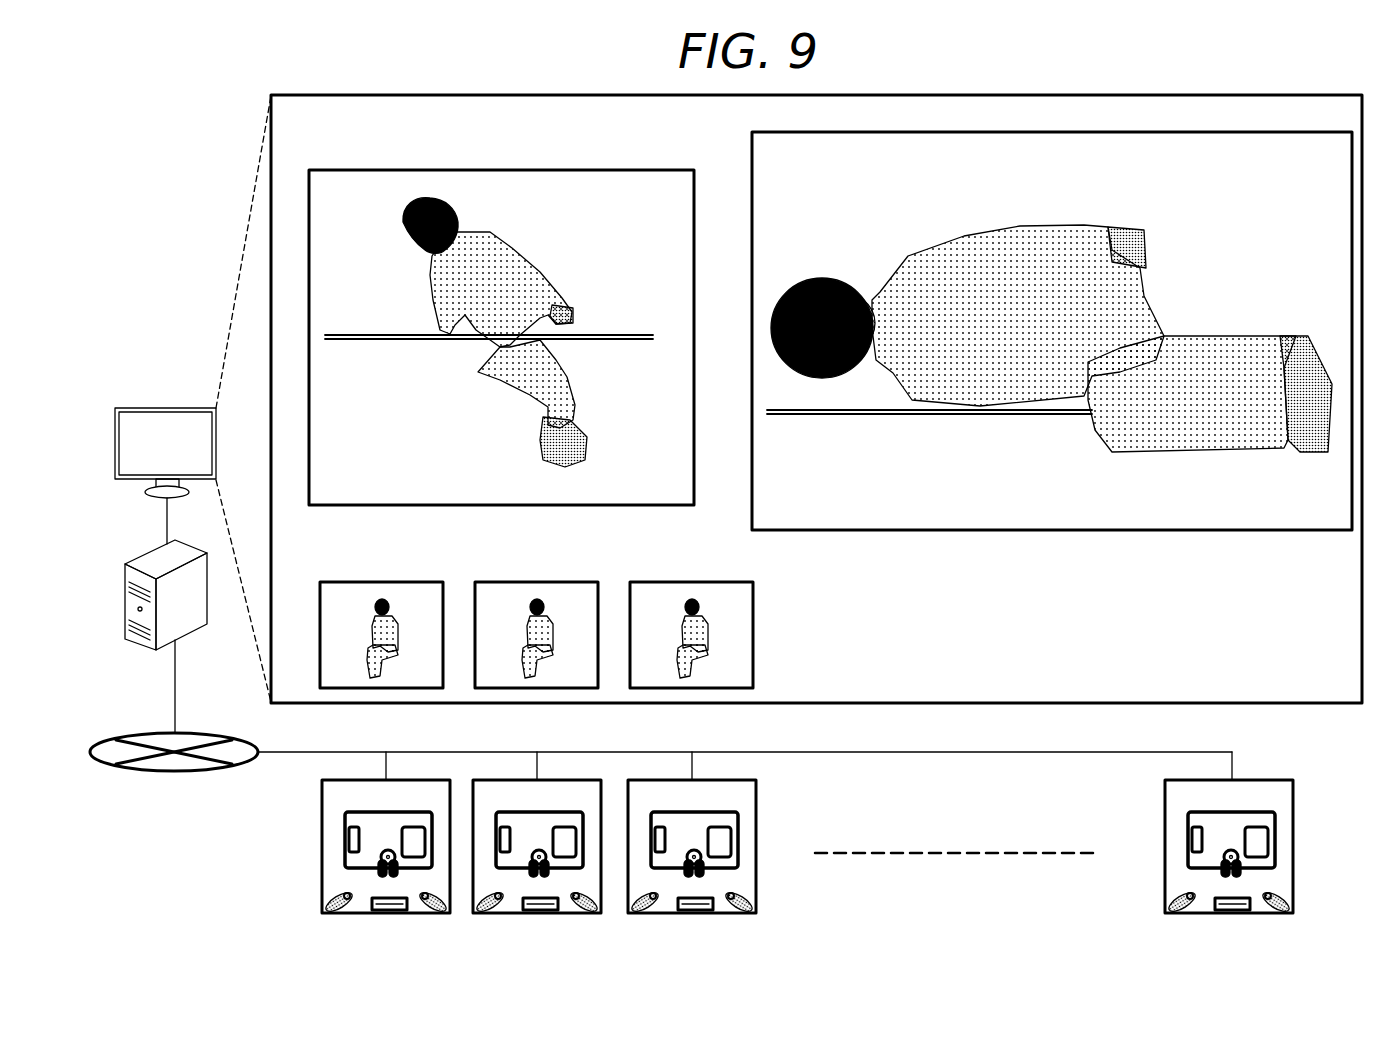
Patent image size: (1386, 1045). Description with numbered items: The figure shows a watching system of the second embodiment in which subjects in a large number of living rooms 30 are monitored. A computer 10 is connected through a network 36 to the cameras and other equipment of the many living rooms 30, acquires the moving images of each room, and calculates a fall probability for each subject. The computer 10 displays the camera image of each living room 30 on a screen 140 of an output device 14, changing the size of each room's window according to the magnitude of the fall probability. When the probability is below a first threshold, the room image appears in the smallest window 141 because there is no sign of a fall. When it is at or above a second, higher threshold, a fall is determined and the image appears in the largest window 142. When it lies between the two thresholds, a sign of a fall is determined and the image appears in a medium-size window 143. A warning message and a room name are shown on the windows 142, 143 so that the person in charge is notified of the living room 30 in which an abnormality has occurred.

The computer 10 is at (141, 559).
The output device 14 is at (136, 408).
The living room 30 is at (365, 913).
The network 36 is at (166, 772).
The screen 140 is at (383, 96).
The smallest window 141 is at (340, 581).
The largest window 142 is at (930, 532).
The medium-size window 143 is at (405, 169).